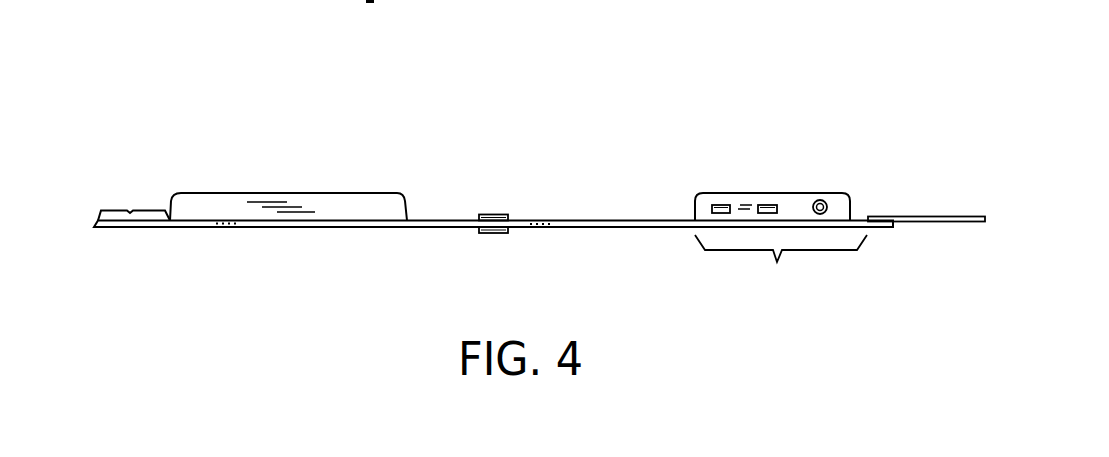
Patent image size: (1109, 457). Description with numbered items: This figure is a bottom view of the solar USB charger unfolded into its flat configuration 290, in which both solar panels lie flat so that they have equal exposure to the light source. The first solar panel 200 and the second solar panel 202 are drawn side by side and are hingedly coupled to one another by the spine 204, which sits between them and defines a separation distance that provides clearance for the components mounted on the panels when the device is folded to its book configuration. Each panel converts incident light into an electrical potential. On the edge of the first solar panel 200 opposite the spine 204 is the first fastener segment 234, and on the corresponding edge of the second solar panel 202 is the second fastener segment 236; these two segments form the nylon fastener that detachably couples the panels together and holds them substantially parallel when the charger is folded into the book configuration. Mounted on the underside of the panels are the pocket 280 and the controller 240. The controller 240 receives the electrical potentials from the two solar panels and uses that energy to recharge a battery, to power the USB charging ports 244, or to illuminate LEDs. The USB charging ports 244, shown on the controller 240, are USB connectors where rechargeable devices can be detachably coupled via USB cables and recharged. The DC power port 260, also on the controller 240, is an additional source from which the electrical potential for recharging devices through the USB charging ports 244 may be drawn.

The first solar panel 200 is at (588, 221).
The second solar panel 202 is at (139, 228).
The spine 204 is at (497, 214).
The first fastener segment 234 is at (927, 216).
The second fastener segment 236 is at (130, 212).
The controller 240 is at (781, 249).
The USB charging ports 244 is at (768, 204).
The DC power port 260 is at (817, 198).
The pocket 280 is at (280, 193).
The flat configuration 290 is at (218, 125).